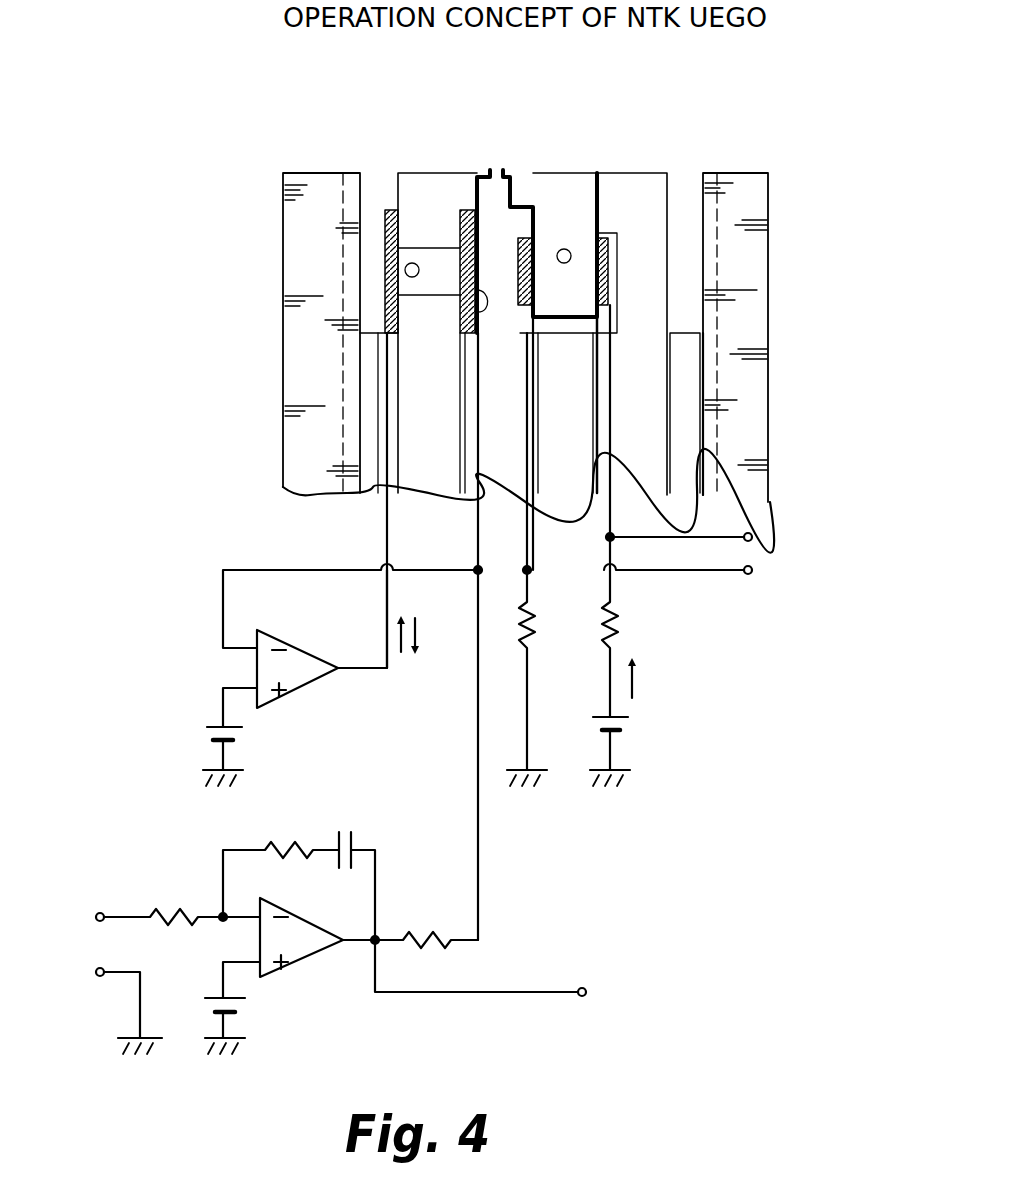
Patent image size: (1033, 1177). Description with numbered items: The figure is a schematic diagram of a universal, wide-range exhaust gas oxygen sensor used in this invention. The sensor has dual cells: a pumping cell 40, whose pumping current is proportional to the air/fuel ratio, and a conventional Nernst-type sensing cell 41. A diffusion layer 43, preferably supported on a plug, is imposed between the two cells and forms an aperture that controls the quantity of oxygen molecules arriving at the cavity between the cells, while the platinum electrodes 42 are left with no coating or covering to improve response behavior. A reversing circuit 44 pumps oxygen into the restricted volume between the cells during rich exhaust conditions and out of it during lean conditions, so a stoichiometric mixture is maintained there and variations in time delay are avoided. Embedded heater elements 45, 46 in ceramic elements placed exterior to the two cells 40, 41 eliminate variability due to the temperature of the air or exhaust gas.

The pumping cell 40 is at (353, 501).
The sensing cell 41 is at (562, 187).
The electrodes 42 is at (463, 325).
The diffusion layer 43 is at (497, 152).
The reversing circuit 44 is at (814, 935).
The heater element 45 is at (345, 237).
The heater element 46 is at (718, 213).